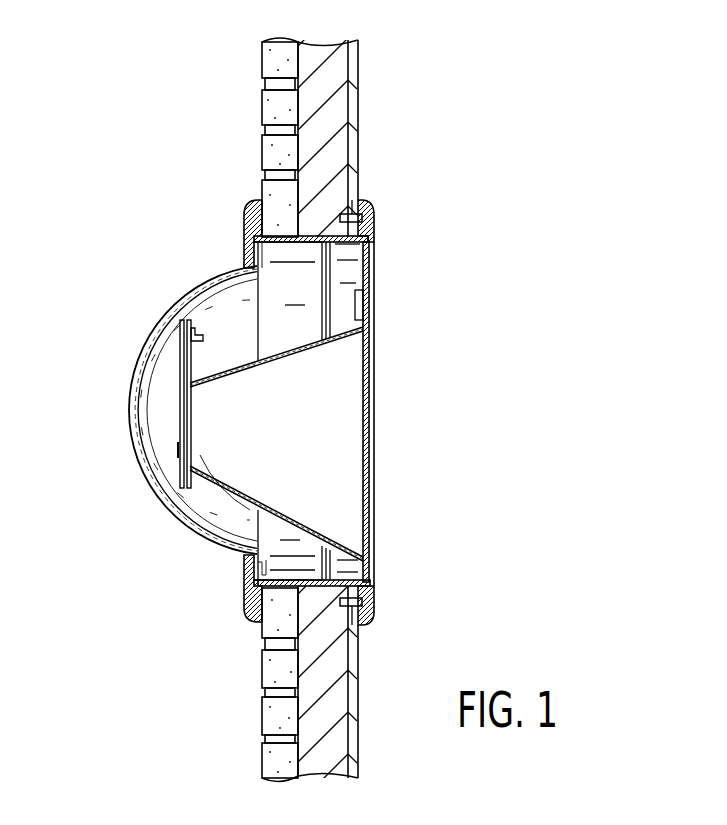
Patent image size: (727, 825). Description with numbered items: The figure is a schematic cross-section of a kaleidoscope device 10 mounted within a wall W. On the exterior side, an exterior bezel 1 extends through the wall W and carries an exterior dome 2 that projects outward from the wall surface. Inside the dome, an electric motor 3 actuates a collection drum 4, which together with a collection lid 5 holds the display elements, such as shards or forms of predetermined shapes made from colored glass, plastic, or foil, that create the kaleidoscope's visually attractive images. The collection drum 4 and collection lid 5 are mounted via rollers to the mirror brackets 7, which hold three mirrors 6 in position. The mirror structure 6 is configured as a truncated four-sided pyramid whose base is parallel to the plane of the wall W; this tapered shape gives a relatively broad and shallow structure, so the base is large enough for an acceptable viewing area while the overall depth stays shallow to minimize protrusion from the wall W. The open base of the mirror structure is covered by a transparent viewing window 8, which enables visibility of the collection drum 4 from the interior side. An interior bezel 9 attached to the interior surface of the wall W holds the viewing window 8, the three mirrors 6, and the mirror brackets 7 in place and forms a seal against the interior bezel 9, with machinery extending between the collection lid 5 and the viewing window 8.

The kaleidoscope device 10 is at (528, 272).
The exterior bezel 1 is at (245, 207).
The exterior dome 2 is at (185, 296).
The electric motor 3 is at (176, 447).
The collection drum 4 is at (183, 418).
The collection lid 5 is at (162, 340).
The mirrors 6 is at (305, 535).
The mirror brackets 7 is at (253, 512).
The viewing window 8 is at (368, 428).
The interior bezel 9 is at (370, 210).
The wall W is at (333, 116).